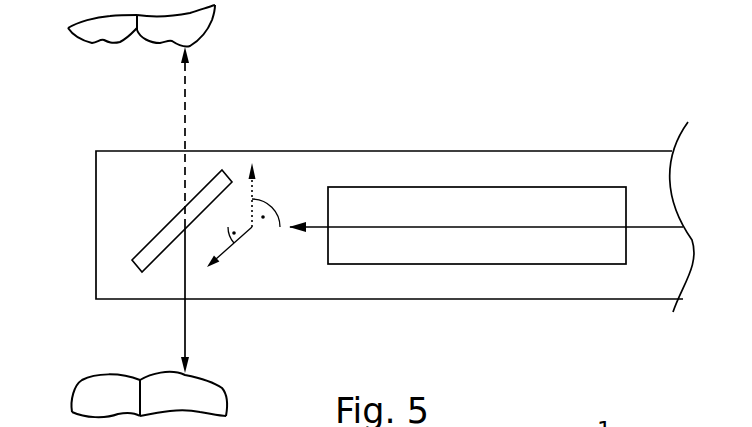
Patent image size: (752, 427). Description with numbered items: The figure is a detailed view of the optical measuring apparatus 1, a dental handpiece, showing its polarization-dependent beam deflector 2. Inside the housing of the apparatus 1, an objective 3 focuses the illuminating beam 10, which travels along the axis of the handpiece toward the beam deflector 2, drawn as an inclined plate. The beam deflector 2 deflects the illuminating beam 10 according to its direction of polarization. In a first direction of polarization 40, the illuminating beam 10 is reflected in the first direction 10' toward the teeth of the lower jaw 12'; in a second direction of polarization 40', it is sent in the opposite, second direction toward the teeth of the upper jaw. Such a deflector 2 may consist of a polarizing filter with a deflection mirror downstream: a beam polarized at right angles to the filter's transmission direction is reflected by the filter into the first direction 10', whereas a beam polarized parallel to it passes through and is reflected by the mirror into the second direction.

The optical 3D measuring apparatus 1 is at (540, 128).
The beam deflector 2 is at (137, 268).
The objective 3 is at (462, 203).
The illuminating beam 10 is at (486, 173).
The first direction 10' is at (228, 300).
The teeth of the lower jaw 12' is at (183, 394).
The first direction of polarization 40 is at (235, 282).
The second direction of polarization 40' is at (247, 165).